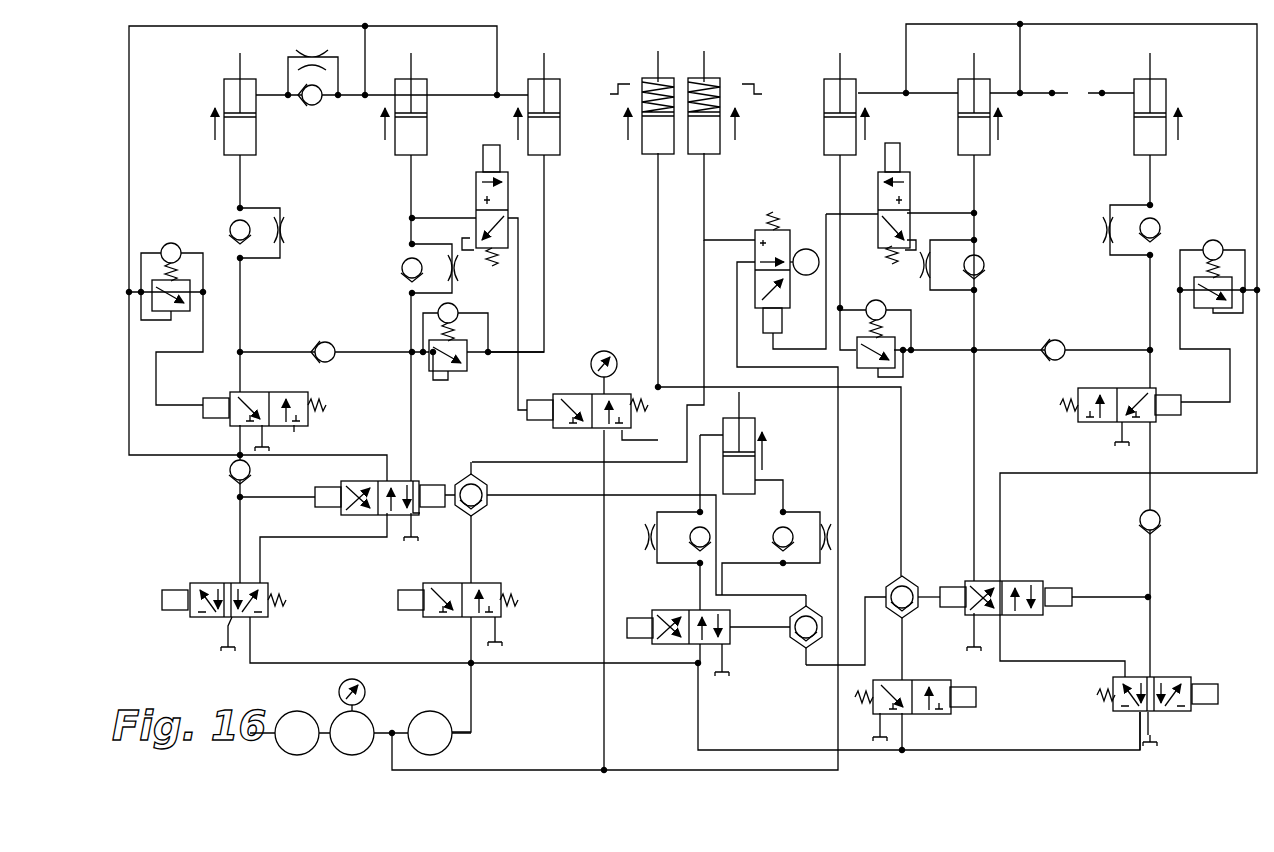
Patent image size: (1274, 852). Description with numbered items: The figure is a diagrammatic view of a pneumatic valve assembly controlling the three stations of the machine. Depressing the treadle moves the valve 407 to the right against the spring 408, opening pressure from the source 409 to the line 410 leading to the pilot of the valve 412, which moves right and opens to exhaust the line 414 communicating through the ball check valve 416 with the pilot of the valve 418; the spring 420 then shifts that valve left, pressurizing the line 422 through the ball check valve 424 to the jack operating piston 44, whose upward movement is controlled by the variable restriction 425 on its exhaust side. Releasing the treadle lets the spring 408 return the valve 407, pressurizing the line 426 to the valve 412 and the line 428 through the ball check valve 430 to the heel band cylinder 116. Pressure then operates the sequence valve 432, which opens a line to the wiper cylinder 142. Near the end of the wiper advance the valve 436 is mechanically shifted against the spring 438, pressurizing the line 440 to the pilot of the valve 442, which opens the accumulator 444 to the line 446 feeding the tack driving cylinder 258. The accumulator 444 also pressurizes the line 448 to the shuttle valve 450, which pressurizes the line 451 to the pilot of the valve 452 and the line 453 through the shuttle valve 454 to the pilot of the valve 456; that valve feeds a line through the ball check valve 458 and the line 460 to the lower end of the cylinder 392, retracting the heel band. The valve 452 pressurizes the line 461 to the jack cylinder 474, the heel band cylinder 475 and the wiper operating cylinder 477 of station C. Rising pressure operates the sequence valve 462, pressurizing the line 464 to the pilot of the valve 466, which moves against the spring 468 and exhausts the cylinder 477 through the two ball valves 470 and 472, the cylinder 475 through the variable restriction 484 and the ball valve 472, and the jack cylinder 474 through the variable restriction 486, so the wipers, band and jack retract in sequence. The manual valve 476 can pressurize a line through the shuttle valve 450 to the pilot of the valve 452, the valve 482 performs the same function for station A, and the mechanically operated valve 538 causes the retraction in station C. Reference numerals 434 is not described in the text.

The jack operating piston 44 is at (222, 153).
The heel band cylinder 116 is at (396, 154).
The wiper cylinder 142 is at (560, 142).
The tack driving cylinder 258 is at (646, 150).
The cylinder 392 is at (757, 478).
The valve 407 is at (214, 583).
The spring 408 is at (288, 600).
The source 409 is at (296, 712).
The line 410 is at (277, 500).
The valve 412 is at (378, 482).
The line 414 is at (130, 441).
The ball check valve 416 is at (172, 244).
The valve 418 is at (292, 427).
The spring 420 is at (327, 405).
The line 422 is at (243, 325).
The ball check valve 424 is at (248, 242).
The variable restriction 425 is at (286, 58).
The line 426 is at (301, 540).
The line 428 is at (414, 440).
The ball check valve 430 is at (405, 262).
The sequence valve 432 is at (436, 348).
The line 434 is at (546, 306).
The valve 436 is at (476, 197).
The spring 438 is at (492, 268).
The line 440 is at (520, 278).
The valve 442 is at (578, 393).
The accumulator 444 is at (611, 351).
The line 446 is at (658, 288).
The line 448 is at (903, 444).
The shuttle valve 450 is at (896, 586).
The line 451 is at (919, 592).
The valve 452 is at (1006, 584).
The line 453 is at (813, 668).
The shuttle valve 454 is at (804, 640).
The valve 456 is at (672, 610).
The ball check valve 458 is at (711, 537).
The line 460 is at (700, 488).
The line 461 is at (1208, 476).
The sequence valve 462 is at (1210, 308).
The line 464 is at (1230, 380).
The valve 466 is at (1098, 424).
The spring 468 is at (1060, 407).
The ball valve 470 is at (894, 284).
The ball valve 472 is at (1063, 343).
The jack cylinder 474 is at (1134, 146).
The heel band cylinder 475 is at (986, 142).
The valve 476 is at (918, 680).
The wiper operating cylinder 477 is at (822, 136).
The valve 482 is at (450, 583).
The variable restriction 484 is at (962, 262).
The variable restriction 486 is at (1097, 252).
The valve 538 is at (908, 197).